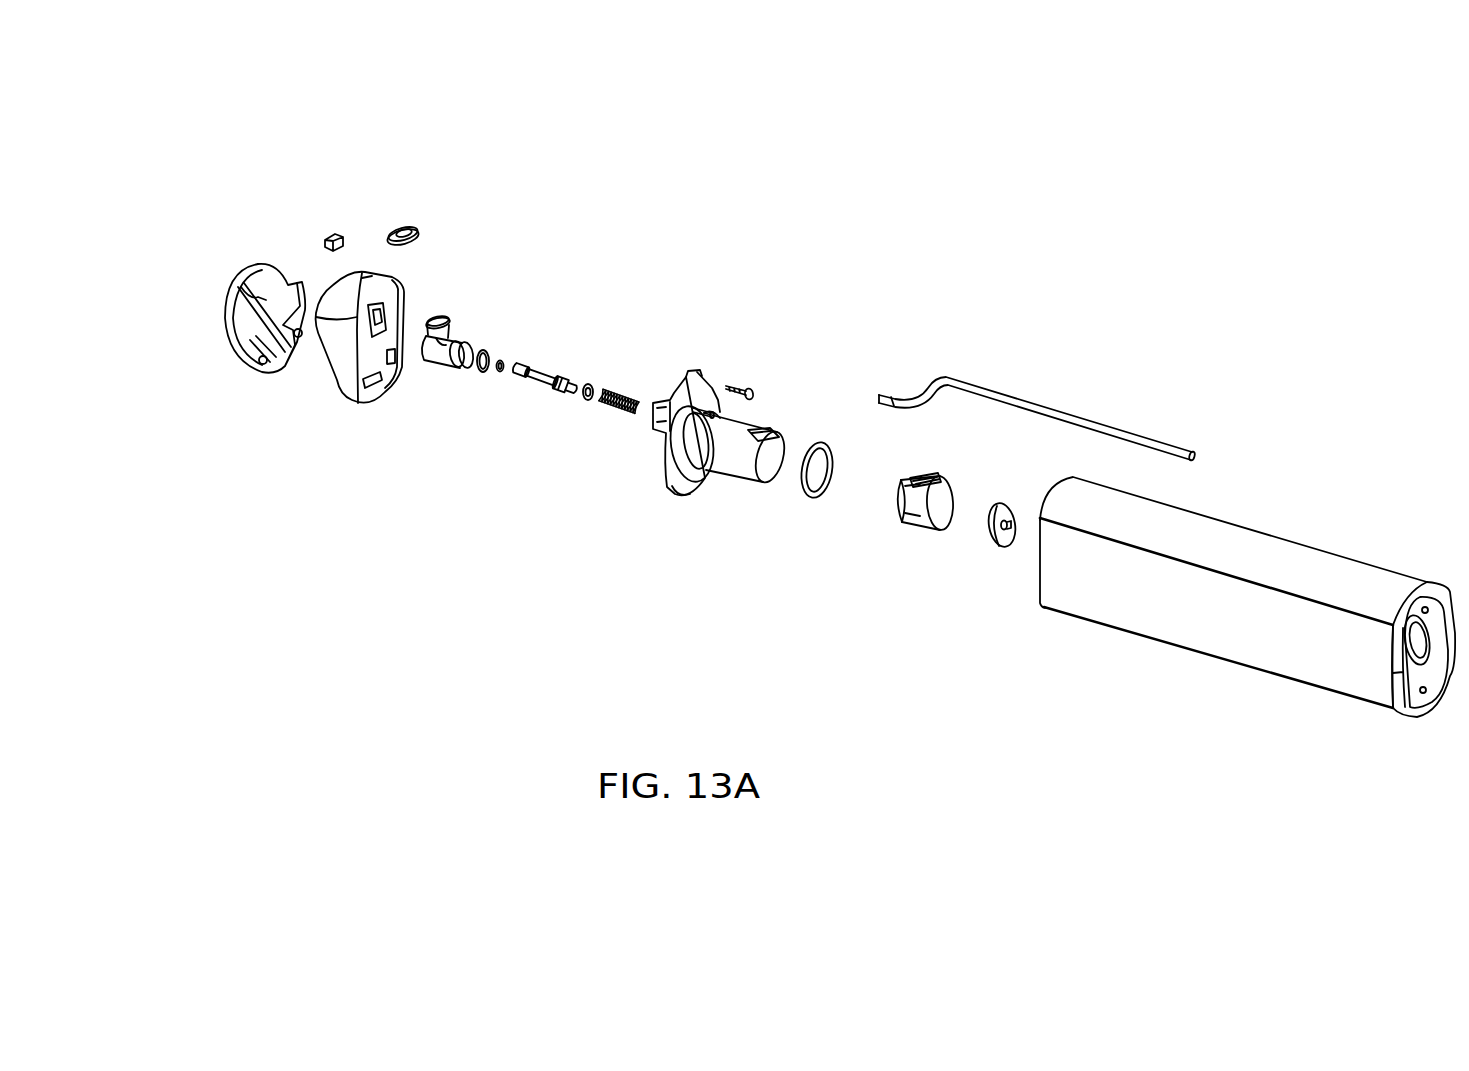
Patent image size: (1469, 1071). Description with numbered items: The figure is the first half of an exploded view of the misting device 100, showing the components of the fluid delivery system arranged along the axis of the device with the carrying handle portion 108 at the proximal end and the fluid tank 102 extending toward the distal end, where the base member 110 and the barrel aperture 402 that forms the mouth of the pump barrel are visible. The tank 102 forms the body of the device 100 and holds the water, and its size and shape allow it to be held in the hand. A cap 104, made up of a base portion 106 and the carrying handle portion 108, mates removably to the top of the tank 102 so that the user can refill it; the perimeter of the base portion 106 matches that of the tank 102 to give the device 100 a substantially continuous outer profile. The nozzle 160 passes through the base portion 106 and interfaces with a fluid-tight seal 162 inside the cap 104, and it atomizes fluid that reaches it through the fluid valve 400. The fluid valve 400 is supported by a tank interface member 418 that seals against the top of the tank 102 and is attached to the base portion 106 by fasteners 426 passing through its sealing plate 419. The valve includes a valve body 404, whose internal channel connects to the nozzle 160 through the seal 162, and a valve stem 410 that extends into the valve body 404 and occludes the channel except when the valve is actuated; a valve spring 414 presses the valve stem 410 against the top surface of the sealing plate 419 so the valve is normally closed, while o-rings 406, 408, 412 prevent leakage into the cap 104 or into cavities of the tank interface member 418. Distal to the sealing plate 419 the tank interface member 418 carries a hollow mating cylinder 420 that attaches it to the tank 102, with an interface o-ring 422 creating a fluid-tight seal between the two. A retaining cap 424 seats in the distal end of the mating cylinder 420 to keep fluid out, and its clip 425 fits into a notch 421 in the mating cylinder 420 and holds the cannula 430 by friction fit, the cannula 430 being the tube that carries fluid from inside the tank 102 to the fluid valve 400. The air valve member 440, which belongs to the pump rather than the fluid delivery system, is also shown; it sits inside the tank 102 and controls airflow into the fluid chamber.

The misting device 100 is at (983, 185).
The fluid tank 102 is at (1276, 524).
The cap 104 is at (413, 277).
The base portion 106 is at (363, 406).
The carrying handle portion 108 is at (224, 316).
The base member 110 is at (1408, 716).
The nozzle 160 is at (337, 232).
The fluid-tight seal 162 is at (420, 228).
The fluid valve 400 is at (608, 582).
The barrel aperture 402 is at (1450, 587).
The valve body 404 is at (455, 311).
The o-ring 406 is at (480, 377).
The o-ring 408 is at (506, 358).
The valve stem 410 is at (547, 386).
The o-ring 412 is at (593, 371).
The valve spring 414 is at (620, 412).
The tank interface member 418 is at (725, 476).
The sealing plate 419 is at (702, 373).
The mating cylinder 420 is at (747, 487).
The notch 421 is at (787, 440).
The interface o-ring 422 is at (807, 502).
The retaining cap 424 is at (920, 529).
The clip 425 is at (933, 480).
The fastener 426 is at (750, 378).
The cannula 430 is at (997, 388).
The air valve member 440 is at (993, 546).